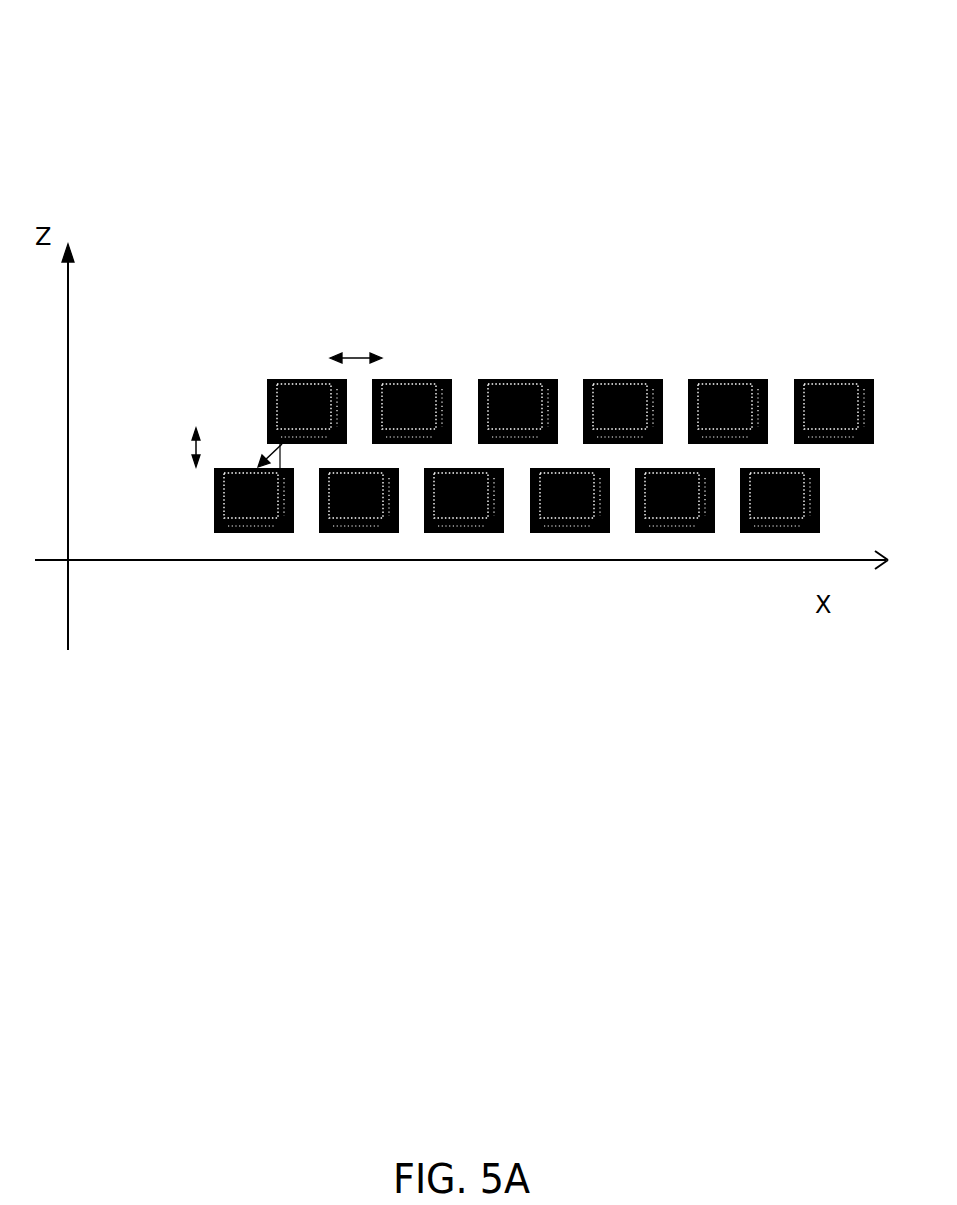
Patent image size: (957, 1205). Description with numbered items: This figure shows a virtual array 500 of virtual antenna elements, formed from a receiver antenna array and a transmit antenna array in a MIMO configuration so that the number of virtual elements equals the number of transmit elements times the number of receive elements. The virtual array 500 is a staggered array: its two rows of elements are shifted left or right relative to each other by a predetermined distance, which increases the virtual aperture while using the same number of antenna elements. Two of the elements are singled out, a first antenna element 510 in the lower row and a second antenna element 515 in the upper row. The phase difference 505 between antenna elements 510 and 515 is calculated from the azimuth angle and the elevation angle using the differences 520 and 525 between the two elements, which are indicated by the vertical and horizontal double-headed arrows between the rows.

The virtual array 500 is at (749, 100).
The phase difference 505 is at (293, 503).
The antenna element 510 is at (247, 533).
The antenna element 515 is at (268, 390).
The difference 520 is at (192, 450).
The difference 525 is at (355, 354).